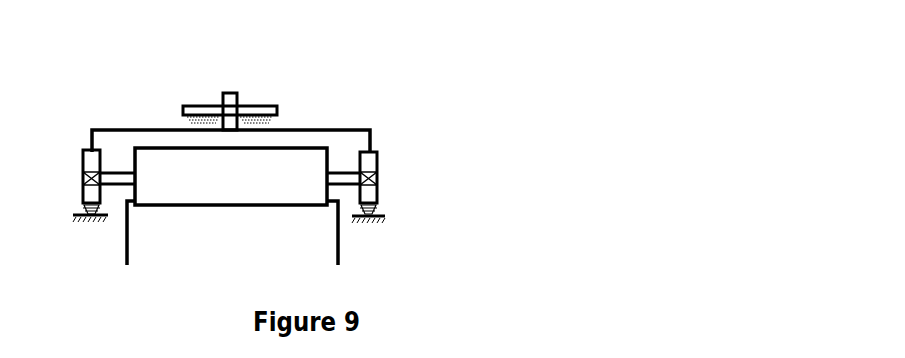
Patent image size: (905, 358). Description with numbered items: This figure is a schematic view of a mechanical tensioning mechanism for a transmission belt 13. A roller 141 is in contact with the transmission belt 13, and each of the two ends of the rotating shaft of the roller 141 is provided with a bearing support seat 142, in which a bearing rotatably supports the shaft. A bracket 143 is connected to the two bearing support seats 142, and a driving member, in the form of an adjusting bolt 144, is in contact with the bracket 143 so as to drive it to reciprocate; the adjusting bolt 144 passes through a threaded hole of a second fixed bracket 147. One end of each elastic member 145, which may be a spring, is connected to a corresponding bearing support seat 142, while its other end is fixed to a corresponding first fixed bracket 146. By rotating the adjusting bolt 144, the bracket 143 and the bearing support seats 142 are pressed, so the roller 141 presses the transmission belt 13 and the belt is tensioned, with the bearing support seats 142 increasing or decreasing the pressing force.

The transmission belt 13 is at (307, 242).
The roller 141 is at (290, 177).
The bearing support seat 142 is at (372, 160).
The bracket 143 is at (315, 128).
The adjusting bolt 144 is at (238, 93).
The elastic member 145 is at (375, 210).
The first fixed bracket 146 is at (385, 220).
The second fixed bracket 147 is at (197, 105).